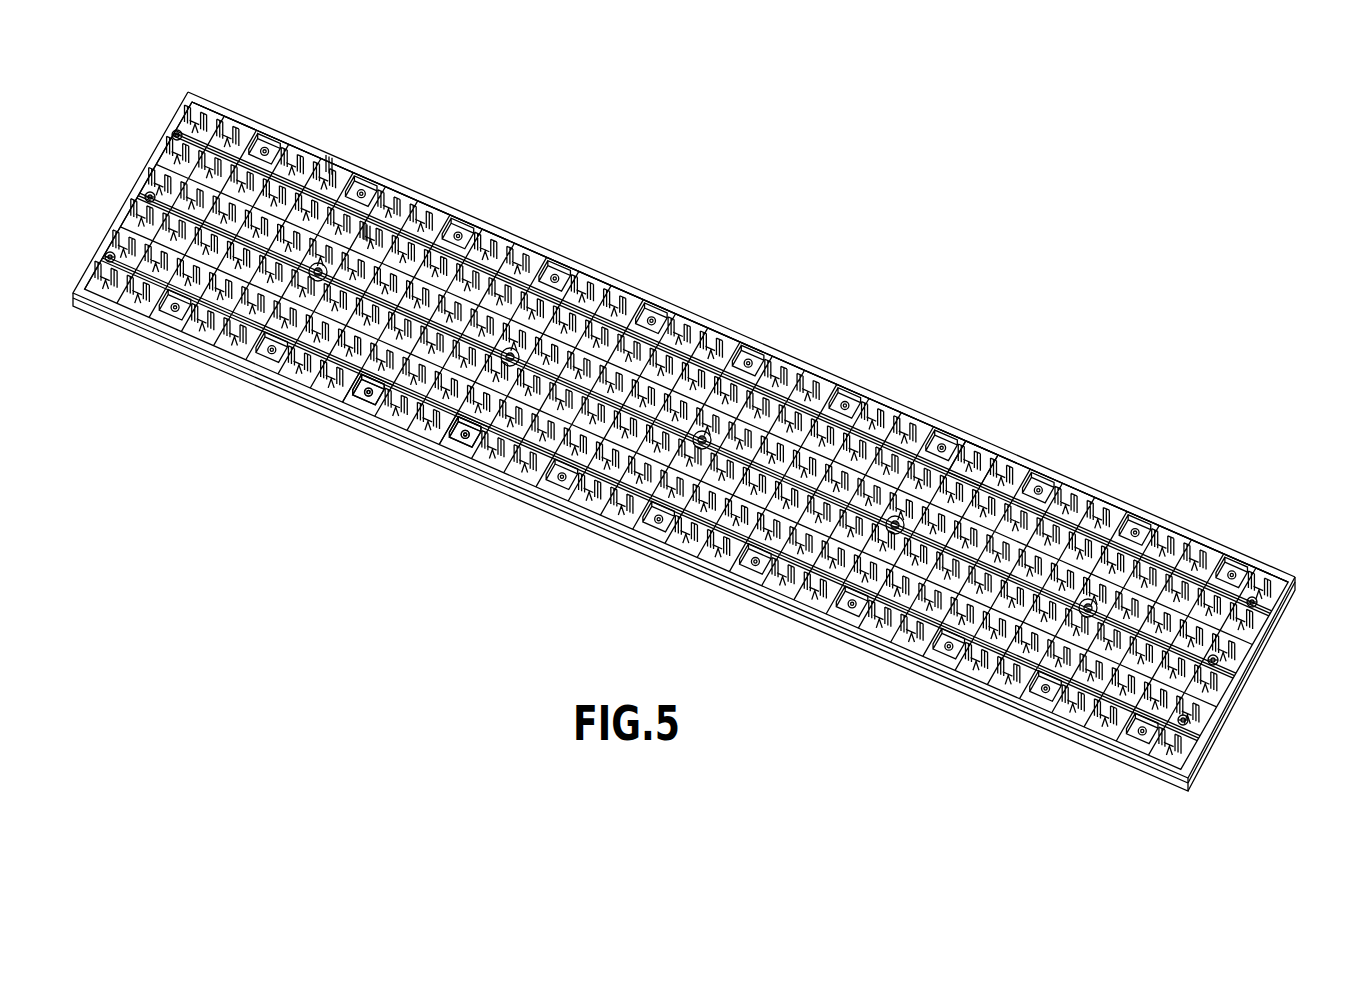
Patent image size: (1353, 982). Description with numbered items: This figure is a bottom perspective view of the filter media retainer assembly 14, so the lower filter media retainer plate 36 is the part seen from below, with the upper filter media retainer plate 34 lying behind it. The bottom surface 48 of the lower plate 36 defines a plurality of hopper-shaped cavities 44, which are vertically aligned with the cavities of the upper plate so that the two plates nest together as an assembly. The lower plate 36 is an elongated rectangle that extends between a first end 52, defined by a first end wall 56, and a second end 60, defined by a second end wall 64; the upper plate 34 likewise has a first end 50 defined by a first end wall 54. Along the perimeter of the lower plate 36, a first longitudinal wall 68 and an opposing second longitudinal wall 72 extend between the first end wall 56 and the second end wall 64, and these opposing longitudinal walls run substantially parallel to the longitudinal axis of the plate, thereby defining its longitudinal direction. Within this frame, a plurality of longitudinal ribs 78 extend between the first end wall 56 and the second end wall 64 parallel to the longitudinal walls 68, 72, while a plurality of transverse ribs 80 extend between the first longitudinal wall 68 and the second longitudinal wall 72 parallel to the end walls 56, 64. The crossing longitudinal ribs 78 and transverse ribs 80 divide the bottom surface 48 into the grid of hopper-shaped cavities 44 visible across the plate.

The media retainer assembly 14 is at (711, 447).
The upper filter media retainer plate 34 is at (1175, 777).
The lower filter media retainer plate 36 is at (1269, 599).
The hopper-shaped cavities 44 is at (983, 457).
The bottom surface 48 is at (898, 408).
The first end 50 is at (1248, 677).
The first end wall 54 is at (1228, 718).
The first end 52 is at (1269, 682).
The first end wall 56 is at (1276, 614).
The second end 60 is at (144, 100).
The second end wall 64 is at (160, 130).
The first longitudinal wall 68 is at (550, 503).
The second longitudinal wall 72 is at (557, 255).
The longitudinal ribs 78 is at (368, 233).
The transverse ribs 80 is at (470, 422).